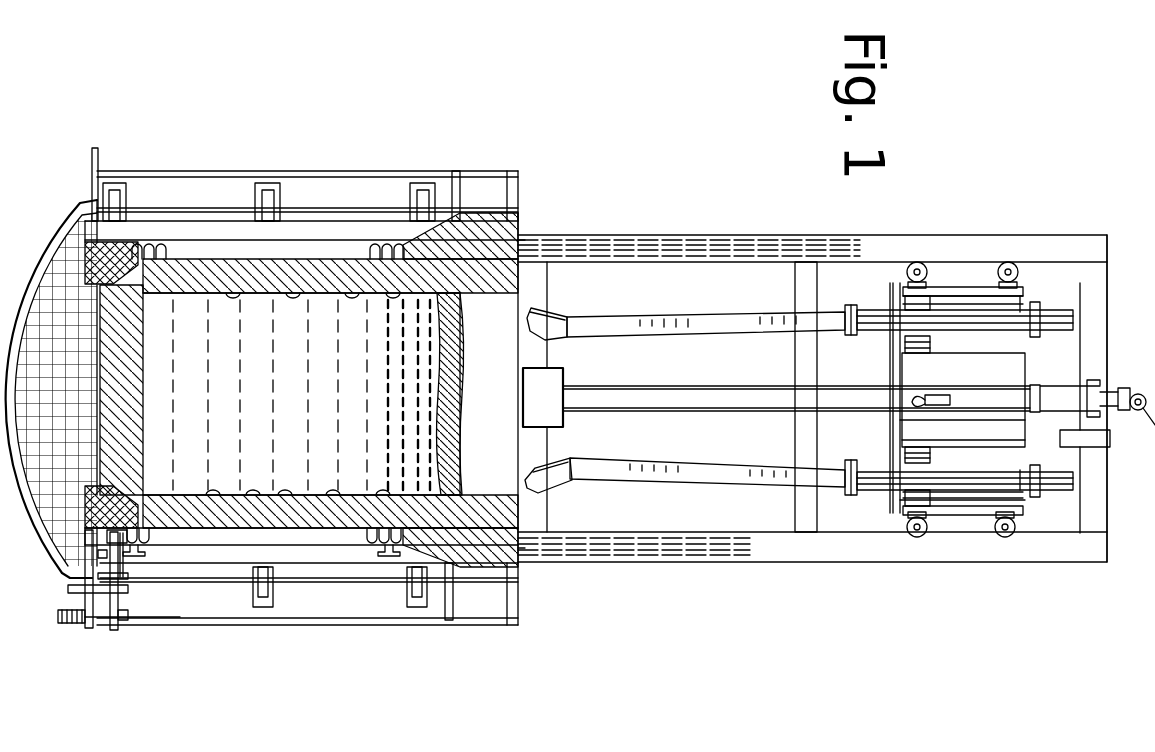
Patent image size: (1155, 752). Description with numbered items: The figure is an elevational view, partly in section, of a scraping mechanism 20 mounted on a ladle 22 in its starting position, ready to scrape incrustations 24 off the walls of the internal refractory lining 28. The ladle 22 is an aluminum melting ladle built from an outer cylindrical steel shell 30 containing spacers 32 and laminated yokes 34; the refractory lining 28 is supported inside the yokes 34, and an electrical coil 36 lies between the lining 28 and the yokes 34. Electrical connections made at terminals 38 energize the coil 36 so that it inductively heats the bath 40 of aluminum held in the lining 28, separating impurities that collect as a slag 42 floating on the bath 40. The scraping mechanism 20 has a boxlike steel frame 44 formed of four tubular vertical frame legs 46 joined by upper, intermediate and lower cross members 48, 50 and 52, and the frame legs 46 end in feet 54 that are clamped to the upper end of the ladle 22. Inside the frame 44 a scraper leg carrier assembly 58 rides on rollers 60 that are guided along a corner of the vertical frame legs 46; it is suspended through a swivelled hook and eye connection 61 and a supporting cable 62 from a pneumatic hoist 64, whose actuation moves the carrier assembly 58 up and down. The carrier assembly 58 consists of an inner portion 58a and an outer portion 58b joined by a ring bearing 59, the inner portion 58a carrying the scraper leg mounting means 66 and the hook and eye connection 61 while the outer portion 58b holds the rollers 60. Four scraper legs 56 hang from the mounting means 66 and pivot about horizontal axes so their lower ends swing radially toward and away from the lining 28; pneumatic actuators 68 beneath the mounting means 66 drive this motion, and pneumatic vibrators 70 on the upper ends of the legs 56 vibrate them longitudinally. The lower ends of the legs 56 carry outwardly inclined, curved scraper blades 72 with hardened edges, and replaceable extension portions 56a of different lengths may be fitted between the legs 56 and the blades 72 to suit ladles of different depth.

The scraping mechanism 20 is at (1093, 218).
The ladle 22 is at (523, 124).
The incrustations 24 is at (238, 297).
The internal refractory lining 28 is at (485, 294).
The outer cylindrical steel shell 30 is at (375, 170).
The spacers 32 is at (128, 212).
The laminated yokes 34 is at (227, 230).
The electrical coil 36 is at (157, 248).
The terminals 38 is at (140, 560).
The bath 40 is at (301, 394).
The slag 42 is at (460, 406).
The boxlike steel frame 44 is at (685, 225).
The vertical frame legs 46 is at (648, 237).
The upper cross members 48 is at (1100, 333).
The intermediate cross members 50 is at (808, 262).
The lower cross members 52 is at (543, 278).
The feet 54 is at (525, 227).
The scraper legs 56 is at (868, 336).
The replaceable extension portions 56a is at (733, 360).
The scraper leg carrier assembly 58 is at (1046, 293).
The inner carrier portion 58a is at (912, 422).
The outer carrier portion 58b is at (973, 540).
The ring bearing 59 is at (1027, 310).
The rollers 60 is at (918, 261).
The swivelled hook and eye connection 61 is at (917, 408).
The supporting cable 62 is at (987, 405).
The pneumatic hoist 64 is at (1097, 443).
The scraper leg mounting means 66 is at (1020, 336).
The pneumatic actuators 68 is at (947, 318).
The pneumatic vibrators 70 is at (1073, 311).
The scraper blades 72 is at (563, 373).